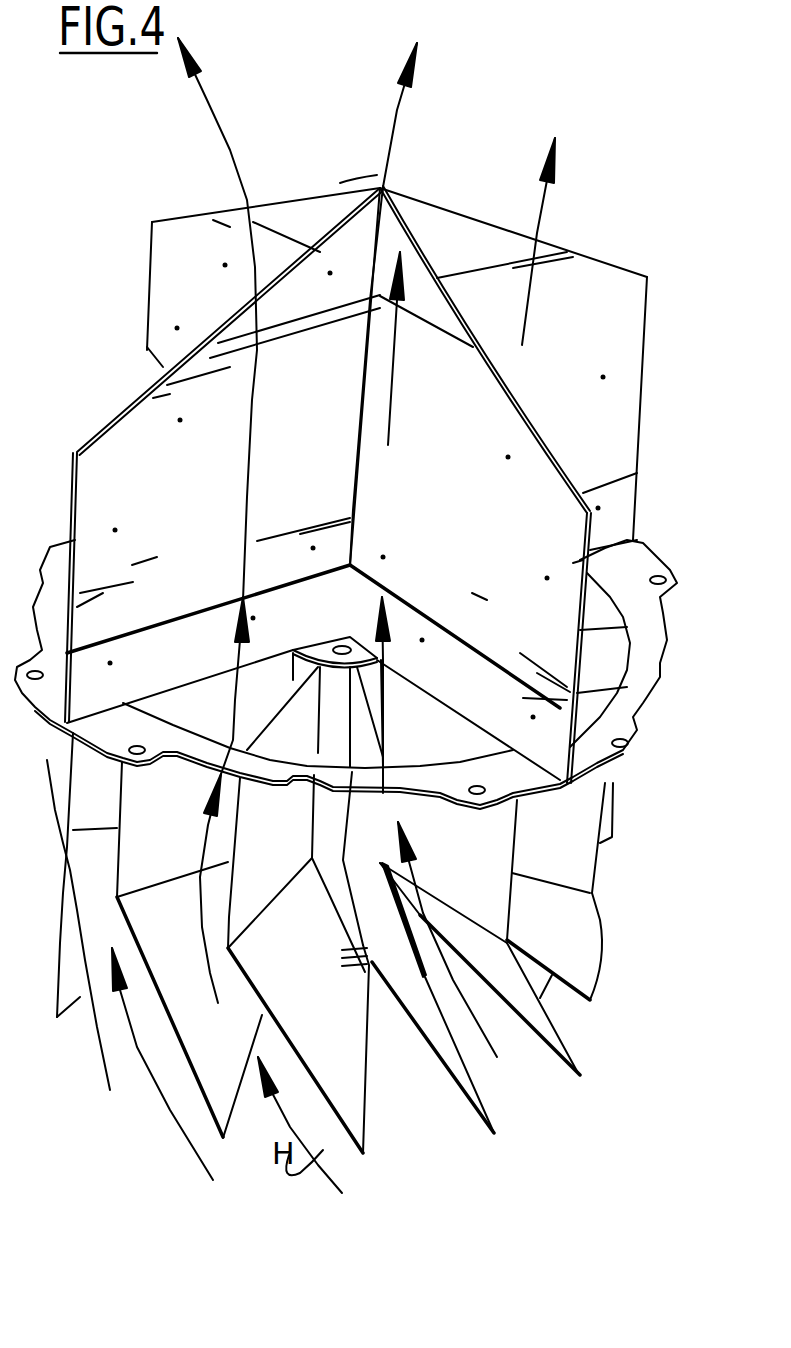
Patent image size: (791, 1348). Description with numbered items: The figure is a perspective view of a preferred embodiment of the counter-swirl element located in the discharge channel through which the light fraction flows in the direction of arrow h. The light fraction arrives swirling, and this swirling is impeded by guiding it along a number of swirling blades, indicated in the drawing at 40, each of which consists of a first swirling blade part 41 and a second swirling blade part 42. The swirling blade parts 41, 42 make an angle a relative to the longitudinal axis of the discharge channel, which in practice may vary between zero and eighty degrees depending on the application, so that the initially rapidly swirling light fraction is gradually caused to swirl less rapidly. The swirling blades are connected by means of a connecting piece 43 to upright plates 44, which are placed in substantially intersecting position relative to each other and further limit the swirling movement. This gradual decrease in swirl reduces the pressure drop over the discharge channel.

The blades 40 is at (528, 1095).
The first swirling blade part 41 is at (350, 1106).
The second swirling blade part 42 is at (312, 712).
The connecting piece 43 is at (643, 703).
The upright plates 44 is at (452, 217).